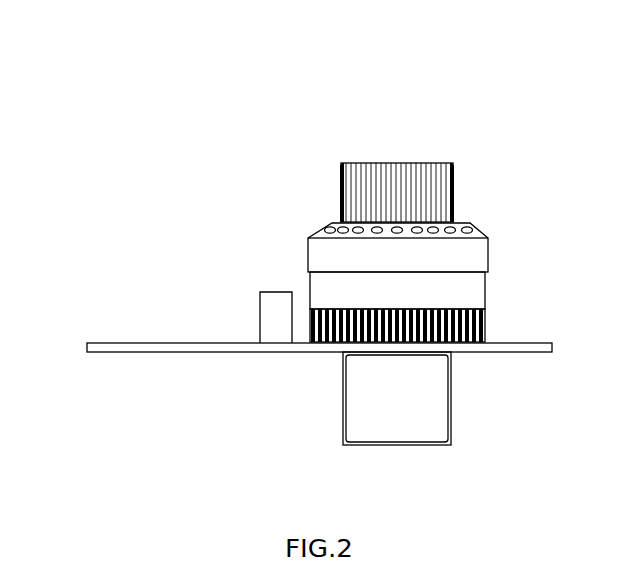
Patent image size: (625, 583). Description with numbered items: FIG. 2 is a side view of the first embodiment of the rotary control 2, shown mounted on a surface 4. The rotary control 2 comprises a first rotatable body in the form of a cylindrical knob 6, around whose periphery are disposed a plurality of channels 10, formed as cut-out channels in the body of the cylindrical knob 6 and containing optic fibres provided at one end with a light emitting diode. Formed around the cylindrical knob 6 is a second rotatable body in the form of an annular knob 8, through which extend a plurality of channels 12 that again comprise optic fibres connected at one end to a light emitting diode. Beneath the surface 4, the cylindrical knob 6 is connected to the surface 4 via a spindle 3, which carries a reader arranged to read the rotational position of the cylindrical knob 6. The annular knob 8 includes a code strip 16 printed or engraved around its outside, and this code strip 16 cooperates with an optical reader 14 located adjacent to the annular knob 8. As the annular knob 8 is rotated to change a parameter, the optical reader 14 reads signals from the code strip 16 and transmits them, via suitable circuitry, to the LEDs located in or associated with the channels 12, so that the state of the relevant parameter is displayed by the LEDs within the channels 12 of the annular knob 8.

The rotary control 2 is at (410, 150).
The spindle 3 is at (430, 395).
The surface 4 is at (110, 348).
The cylindrical knob 6 is at (395, 167).
The annular knob 8 is at (477, 258).
The channels 10 is at (343, 167).
The channels 12 is at (450, 230).
The optical reader 14 is at (272, 312).
The code strip 16 is at (485, 322).